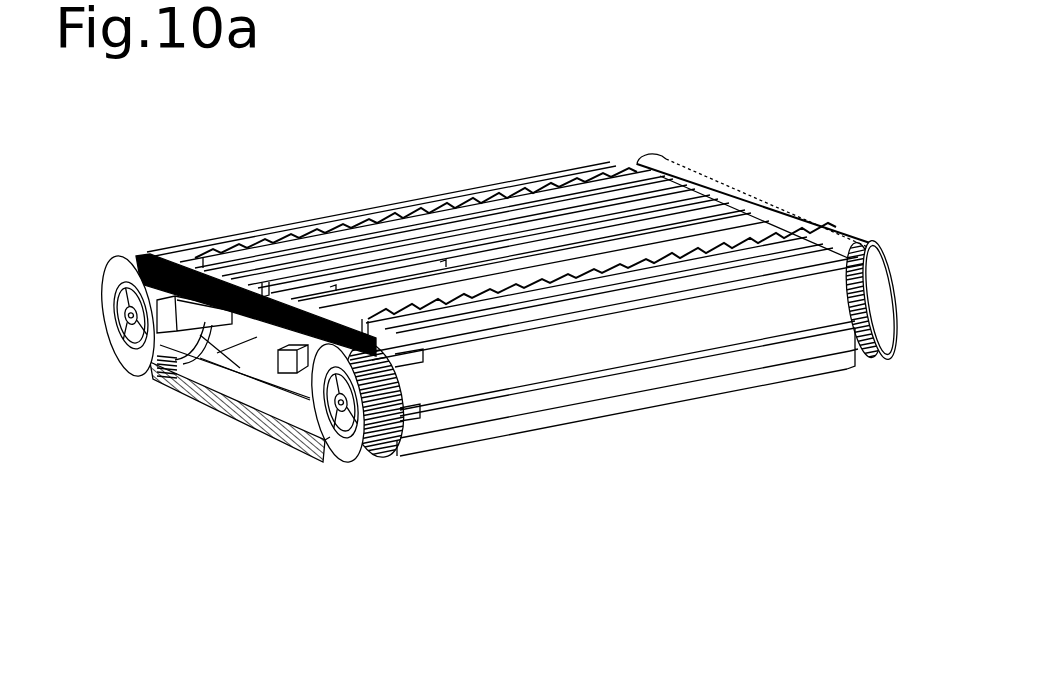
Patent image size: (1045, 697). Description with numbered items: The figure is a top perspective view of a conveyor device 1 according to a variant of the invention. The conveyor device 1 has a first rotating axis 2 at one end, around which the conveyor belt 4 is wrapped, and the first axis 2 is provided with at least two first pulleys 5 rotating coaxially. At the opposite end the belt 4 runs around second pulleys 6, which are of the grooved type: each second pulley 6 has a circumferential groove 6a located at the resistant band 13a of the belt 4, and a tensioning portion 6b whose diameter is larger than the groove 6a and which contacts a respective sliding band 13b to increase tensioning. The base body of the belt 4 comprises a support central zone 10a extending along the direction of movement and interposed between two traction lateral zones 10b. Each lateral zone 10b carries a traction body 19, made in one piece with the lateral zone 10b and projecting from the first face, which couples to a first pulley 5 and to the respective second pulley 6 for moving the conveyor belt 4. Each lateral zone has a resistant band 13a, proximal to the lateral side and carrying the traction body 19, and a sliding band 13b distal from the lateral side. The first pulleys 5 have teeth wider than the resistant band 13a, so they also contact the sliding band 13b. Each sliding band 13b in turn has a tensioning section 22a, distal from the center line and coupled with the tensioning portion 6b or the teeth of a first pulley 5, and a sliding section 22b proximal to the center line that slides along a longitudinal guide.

The conveyor device 1 is at (524, 150).
The first rotating axis 2 is at (893, 263).
The conveyor belt 4 is at (600, 248).
The first pulley 5 is at (358, 452).
The second pulley 6 is at (122, 353).
The circumferential groove 6a is at (165, 258).
The tensioning portion 6b is at (205, 262).
The support central zone 10a is at (597, 325).
The traction lateral zone 10b is at (407, 390).
The resistant band 13a is at (250, 420).
The sliding band 13b is at (200, 397).
The traction body 19 is at (297, 440).
The tensioning section 22a is at (243, 300).
The sliding section 22b is at (283, 295).